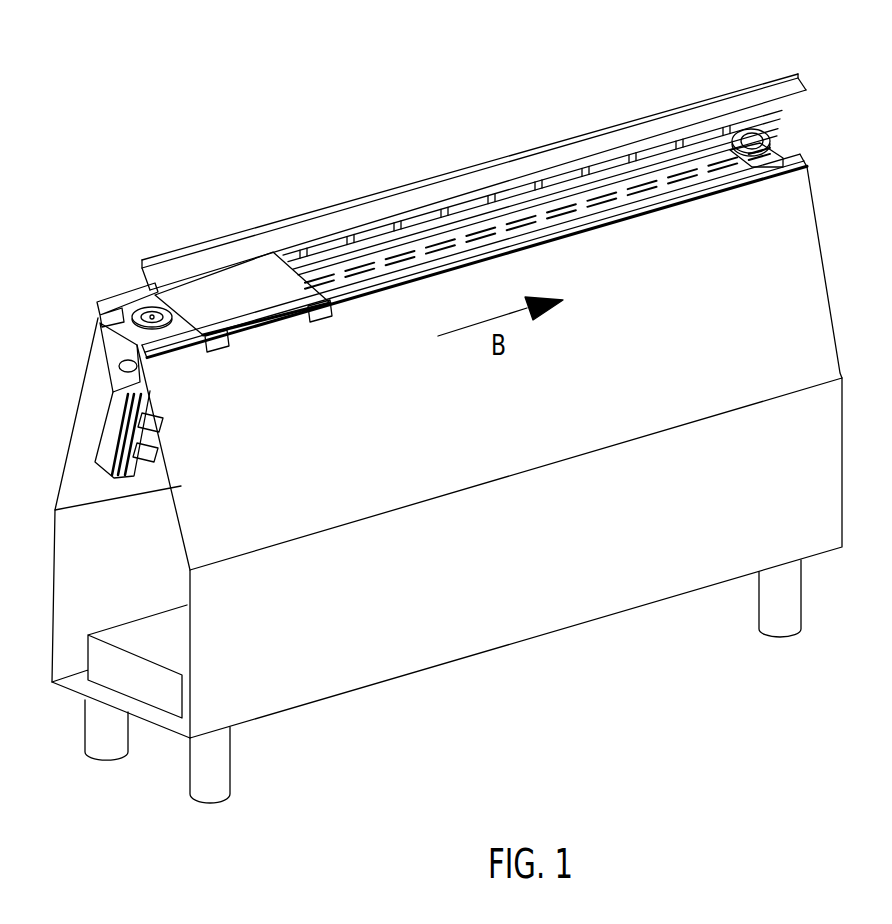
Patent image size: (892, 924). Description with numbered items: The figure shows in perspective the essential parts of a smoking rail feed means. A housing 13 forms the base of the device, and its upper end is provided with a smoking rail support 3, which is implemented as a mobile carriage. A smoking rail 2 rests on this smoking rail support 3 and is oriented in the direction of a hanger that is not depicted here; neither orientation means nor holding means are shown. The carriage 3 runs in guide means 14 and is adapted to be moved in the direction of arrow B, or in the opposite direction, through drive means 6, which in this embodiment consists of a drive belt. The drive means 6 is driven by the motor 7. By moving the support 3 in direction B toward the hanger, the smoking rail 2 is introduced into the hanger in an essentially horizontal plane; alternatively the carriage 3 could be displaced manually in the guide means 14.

The smoking rail 2 is at (760, 80).
The smoking rail support 3 is at (258, 313).
The drive means 6 is at (97, 340).
The motor 7 is at (117, 408).
The housing 13 is at (708, 565).
The guide means 14 is at (705, 195).